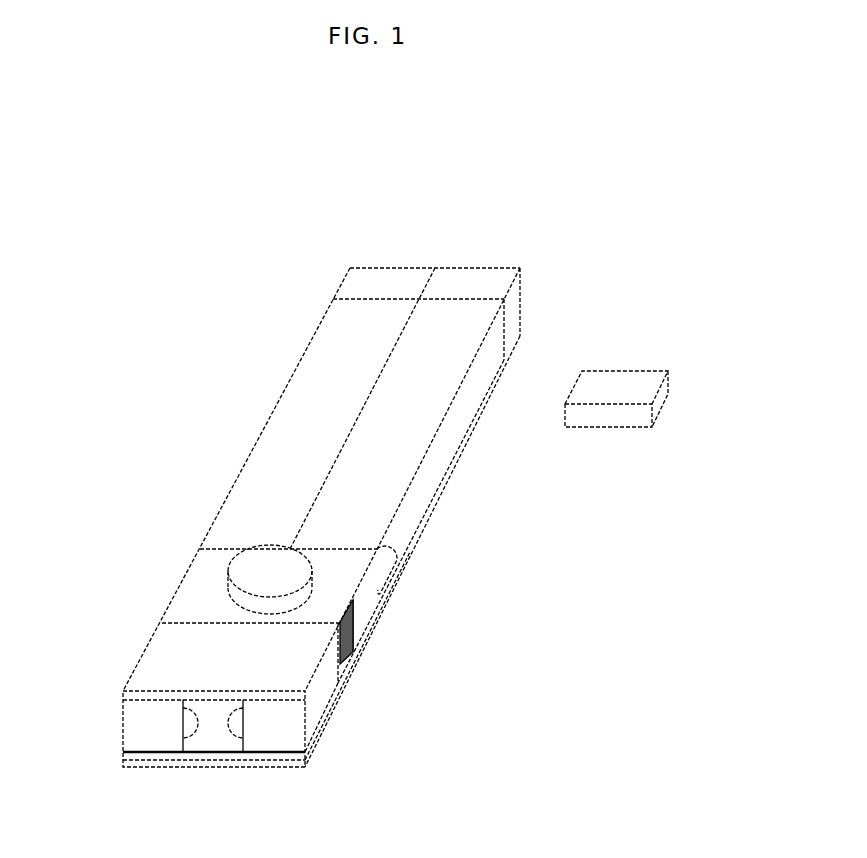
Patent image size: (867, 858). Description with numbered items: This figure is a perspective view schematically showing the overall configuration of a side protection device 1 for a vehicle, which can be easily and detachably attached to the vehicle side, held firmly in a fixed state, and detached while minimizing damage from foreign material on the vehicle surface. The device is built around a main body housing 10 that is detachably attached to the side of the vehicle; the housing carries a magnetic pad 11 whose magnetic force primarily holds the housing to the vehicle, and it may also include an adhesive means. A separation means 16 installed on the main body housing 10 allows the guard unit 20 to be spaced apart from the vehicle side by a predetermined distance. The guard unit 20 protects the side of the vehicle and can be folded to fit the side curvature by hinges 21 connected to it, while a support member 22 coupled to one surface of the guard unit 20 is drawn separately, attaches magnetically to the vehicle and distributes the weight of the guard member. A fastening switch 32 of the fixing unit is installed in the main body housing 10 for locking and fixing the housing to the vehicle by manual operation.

The side protection device 1 is at (464, 156).
The main body housing 10 is at (135, 643).
The magnetic pad 11 is at (123, 764).
The separation means 16 is at (258, 566).
The guard unit 20 is at (290, 343).
The hinges 21 is at (386, 566).
The support member 22 is at (657, 358).
The fastening switch 32 is at (262, 728).